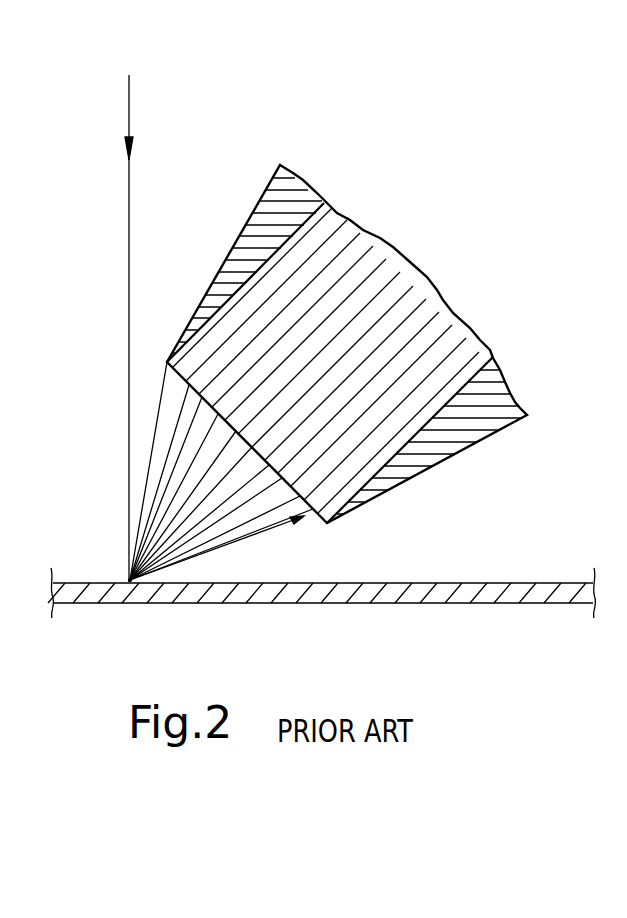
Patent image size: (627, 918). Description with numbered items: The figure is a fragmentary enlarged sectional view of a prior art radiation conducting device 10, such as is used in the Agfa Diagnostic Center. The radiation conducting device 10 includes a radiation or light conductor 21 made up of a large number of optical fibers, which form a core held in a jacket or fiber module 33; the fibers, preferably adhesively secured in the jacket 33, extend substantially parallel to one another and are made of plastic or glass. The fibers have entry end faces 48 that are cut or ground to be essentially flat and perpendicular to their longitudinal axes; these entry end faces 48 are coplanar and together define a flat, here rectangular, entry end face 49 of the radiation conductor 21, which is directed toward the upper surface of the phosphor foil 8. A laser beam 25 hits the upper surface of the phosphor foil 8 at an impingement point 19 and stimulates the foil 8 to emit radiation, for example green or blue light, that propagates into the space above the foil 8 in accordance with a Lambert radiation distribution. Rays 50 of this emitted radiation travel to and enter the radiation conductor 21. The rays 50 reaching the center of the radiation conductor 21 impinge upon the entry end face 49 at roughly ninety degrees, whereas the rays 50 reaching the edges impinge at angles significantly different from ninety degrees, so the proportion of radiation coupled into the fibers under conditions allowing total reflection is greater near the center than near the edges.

The radiation conducting device 10 is at (433, 138).
The radiation conductor 21 is at (431, 300).
The jacket 33 is at (270, 186).
The laser beam 25 is at (129, 216).
The impingement point 19 is at (126, 580).
The entry end faces 48 is at (182, 392).
The rays 50 is at (187, 474).
The entry end face 49 is at (296, 520).
The phosphor foil 8 is at (408, 582).